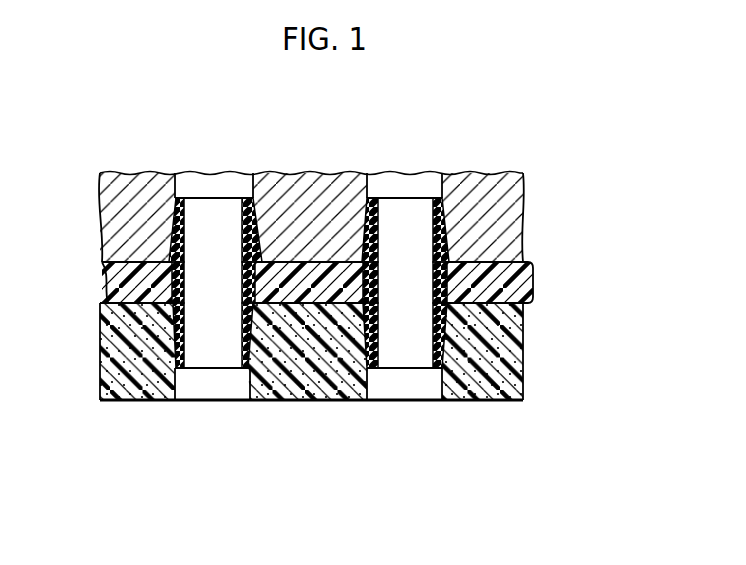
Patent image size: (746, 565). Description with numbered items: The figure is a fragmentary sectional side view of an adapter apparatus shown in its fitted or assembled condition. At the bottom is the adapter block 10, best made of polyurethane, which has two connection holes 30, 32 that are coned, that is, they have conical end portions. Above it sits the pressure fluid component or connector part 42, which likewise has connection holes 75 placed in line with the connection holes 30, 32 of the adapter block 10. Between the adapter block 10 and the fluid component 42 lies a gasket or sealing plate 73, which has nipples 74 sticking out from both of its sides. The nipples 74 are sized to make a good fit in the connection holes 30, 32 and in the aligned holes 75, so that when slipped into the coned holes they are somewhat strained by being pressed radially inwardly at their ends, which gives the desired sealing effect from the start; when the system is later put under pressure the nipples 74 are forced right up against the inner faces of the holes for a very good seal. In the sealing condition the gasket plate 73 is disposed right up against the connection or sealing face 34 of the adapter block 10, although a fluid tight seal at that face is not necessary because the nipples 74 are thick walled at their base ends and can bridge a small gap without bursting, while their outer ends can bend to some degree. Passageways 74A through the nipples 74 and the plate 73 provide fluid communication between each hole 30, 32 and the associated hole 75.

The adapter block 10 is at (502, 349).
The connection hole 30 is at (213, 388).
The connection hole 32 is at (401, 387).
The connection face 34 is at (110, 302).
The connector part 42 is at (508, 207).
The sealing plate 73 is at (528, 288).
The nipple 74 is at (178, 198).
The passageway 74A is at (186, 336).
The connection hole 75 is at (233, 183).